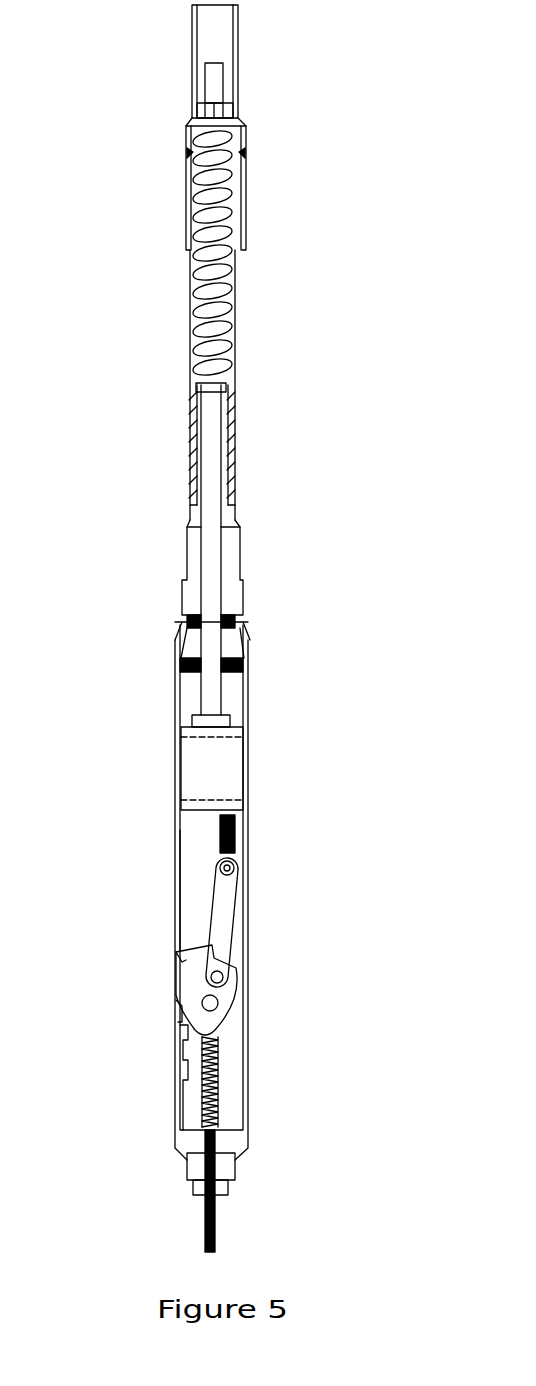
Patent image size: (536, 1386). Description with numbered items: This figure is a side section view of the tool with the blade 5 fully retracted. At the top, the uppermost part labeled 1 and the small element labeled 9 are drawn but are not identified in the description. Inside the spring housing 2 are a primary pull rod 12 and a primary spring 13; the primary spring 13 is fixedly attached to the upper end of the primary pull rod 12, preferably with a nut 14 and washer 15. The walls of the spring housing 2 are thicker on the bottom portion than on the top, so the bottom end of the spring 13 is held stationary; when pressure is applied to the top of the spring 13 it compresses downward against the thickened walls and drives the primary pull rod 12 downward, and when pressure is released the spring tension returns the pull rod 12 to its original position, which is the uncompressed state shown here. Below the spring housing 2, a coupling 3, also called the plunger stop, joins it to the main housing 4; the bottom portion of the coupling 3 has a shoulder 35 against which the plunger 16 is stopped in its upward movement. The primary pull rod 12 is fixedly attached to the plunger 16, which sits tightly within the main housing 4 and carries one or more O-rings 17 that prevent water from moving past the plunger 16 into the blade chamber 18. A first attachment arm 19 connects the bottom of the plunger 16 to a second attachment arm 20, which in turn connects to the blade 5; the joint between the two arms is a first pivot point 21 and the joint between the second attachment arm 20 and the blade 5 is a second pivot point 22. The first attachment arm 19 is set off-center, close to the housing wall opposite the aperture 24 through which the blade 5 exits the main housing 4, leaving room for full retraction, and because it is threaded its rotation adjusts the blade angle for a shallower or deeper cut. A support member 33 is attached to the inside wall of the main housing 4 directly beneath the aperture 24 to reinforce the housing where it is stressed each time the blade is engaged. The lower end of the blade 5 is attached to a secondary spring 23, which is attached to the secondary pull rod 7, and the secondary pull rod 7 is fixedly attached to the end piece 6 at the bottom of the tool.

The upper tube 1 is at (237, 48).
The pin 9 is at (194, 80).
The nut 14 is at (224, 102).
The washer 15 is at (236, 118).
The primary spring 13 is at (230, 327).
The spring housing 2 is at (192, 462).
The primary pull rod 12 is at (210, 468).
The coupling 3 is at (247, 625).
The shoulder 35 is at (248, 660).
The main housing 4 is at (176, 710).
The plunger 16 is at (218, 773).
The O-rings 17 is at (178, 800).
The blade chamber 18 is at (196, 872).
The first attachment arm 19 is at (236, 835).
The second attachment arm 20 is at (222, 910).
The first pivot point 21 is at (234, 866).
The second pivot point 22 is at (222, 982).
The blade 5 is at (186, 978).
The aperture 24 is at (178, 1010).
The support member 33 is at (182, 1055).
The secondary spring 23 is at (219, 1088).
The end piece 6 is at (193, 1190).
The secondary pull rod 7 is at (214, 1235).